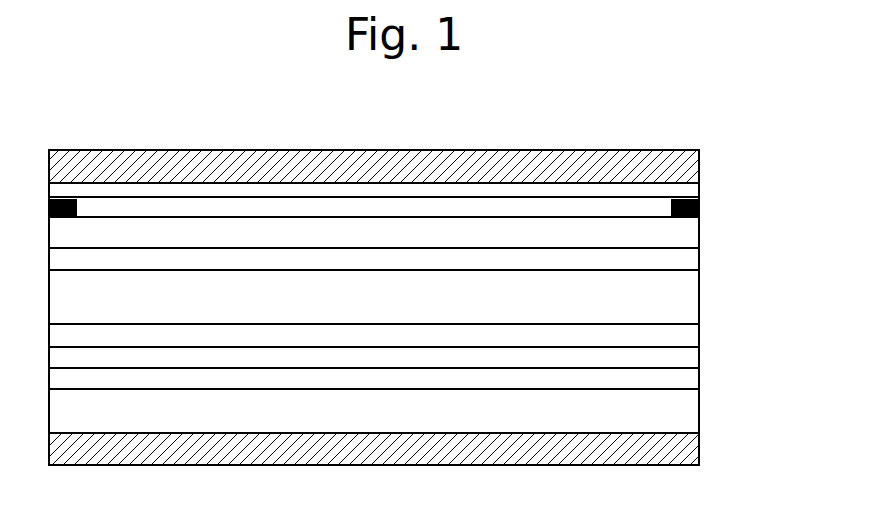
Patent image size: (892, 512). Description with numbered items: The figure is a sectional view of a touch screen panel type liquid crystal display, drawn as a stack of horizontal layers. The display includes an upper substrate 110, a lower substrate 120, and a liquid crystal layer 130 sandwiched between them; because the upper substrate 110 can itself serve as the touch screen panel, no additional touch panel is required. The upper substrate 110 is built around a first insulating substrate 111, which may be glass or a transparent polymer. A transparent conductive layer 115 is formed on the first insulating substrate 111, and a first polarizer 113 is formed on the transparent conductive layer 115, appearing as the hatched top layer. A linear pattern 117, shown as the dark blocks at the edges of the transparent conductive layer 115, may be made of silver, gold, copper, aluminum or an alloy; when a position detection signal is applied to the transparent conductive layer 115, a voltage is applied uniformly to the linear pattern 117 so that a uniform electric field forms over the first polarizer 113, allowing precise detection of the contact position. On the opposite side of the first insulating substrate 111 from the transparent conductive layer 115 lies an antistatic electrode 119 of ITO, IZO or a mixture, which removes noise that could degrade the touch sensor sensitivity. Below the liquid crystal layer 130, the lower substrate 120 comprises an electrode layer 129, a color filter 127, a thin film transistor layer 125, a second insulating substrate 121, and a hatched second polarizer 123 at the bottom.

The upper substrate 110 is at (772, 139).
The first polarizer 113 is at (693, 168).
The transparent conductive layer 115 is at (693, 193).
The linear pattern 117 is at (693, 208).
The first insulating substrate 111 is at (693, 232).
The antistatic electrode 119 is at (693, 258).
The liquid crystal layer 130 is at (693, 306).
The lower substrate 120 is at (772, 333).
The electrode layer 129 is at (693, 333).
The color filter 127 is at (693, 357).
The thin film transistor layer 125 is at (693, 378).
The second insulating substrate 121 is at (693, 408).
The second polarizer 123 is at (693, 448).